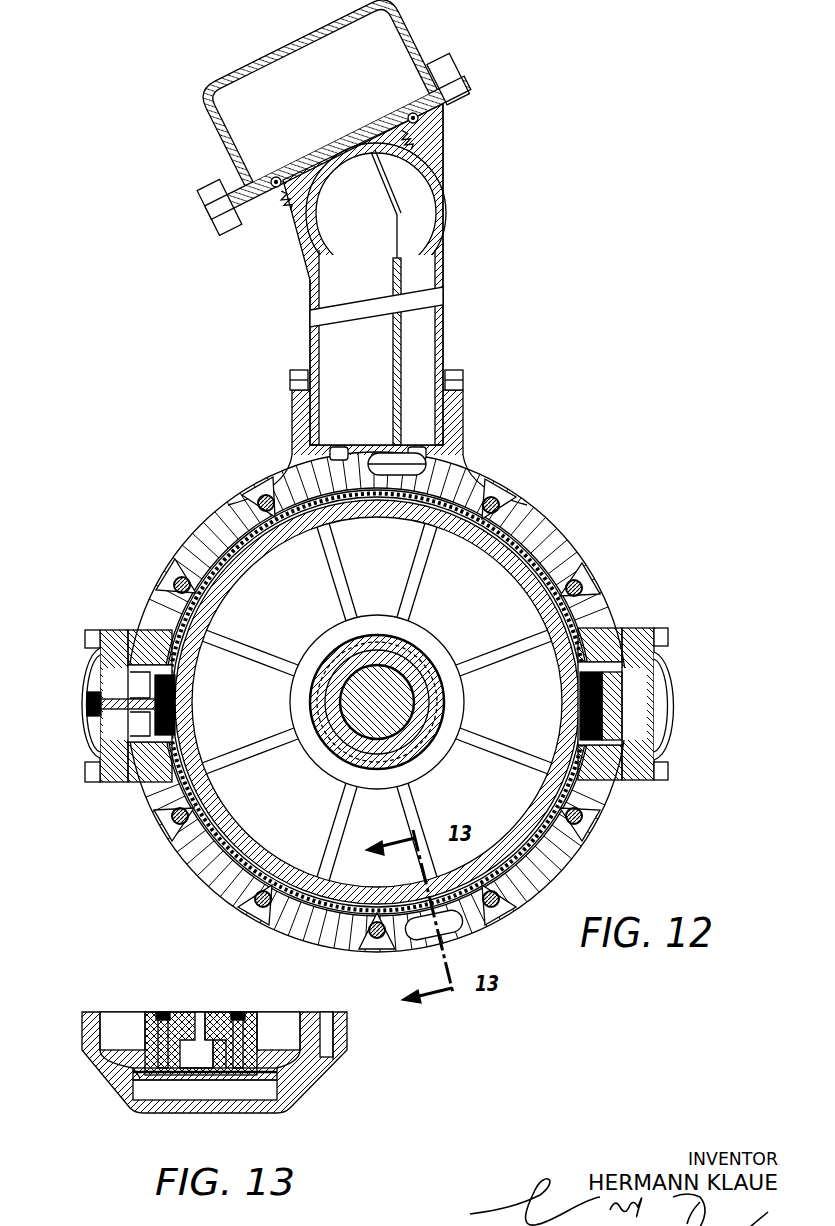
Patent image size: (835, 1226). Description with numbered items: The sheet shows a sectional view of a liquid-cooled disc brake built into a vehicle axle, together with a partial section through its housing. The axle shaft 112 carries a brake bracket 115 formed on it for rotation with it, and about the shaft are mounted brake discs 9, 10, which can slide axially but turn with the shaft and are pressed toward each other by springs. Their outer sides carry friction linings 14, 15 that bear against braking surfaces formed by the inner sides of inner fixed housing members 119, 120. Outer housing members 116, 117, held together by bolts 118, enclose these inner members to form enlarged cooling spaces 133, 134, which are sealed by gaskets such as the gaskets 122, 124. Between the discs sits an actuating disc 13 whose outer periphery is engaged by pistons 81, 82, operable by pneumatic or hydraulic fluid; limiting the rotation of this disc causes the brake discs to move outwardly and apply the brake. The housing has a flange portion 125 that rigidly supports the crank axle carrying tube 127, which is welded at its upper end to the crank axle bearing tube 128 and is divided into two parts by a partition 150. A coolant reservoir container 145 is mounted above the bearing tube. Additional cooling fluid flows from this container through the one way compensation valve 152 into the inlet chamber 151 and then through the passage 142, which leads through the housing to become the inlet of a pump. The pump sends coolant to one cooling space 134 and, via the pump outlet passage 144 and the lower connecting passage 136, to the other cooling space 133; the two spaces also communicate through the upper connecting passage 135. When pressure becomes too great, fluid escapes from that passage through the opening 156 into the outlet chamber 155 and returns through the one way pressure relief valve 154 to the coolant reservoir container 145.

In FIG. 12, the brake disc 9 is at (452, 670).
In FIG. 13, the brake disc 9 is at (177, 1025).
In FIG. 13, the brake disc 10 is at (218, 1020).
In FIG. 12, the actuating disc 13 is at (520, 843).
In FIG. 13, the actuating disc 13 is at (200, 1020).
In FIG. 12, the friction lining 14 is at (478, 600).
In FIG. 13, the friction lining 14 is at (152, 1025).
In FIG. 13, the friction lining 15 is at (228, 1020).
In FIG. 12, the piston 81 is at (605, 690).
In FIG. 12, the piston 82 is at (97, 770).
In FIG. 12, the axle shaft 112 is at (332, 703).
In FIG. 12, the brake bracket 115 is at (345, 656).
In FIG. 12, the outer housing member 116 is at (212, 855).
In FIG. 13, the outer housing member 116 is at (90, 1027).
In FIG. 13, the outer housing member 117 is at (339, 1022).
In FIG. 12, the bolt 118 is at (172, 818).
In FIG. 13, the inner fixed housing member 119 is at (108, 1027).
In FIG. 13, the inner fixed housing member 120 is at (250, 1020).
In FIG. 13, the gasket 122 is at (140, 1072).
In FIG. 13, the gasket 124 is at (265, 1069).
In FIG. 12, the flange portion 125 is at (465, 416).
In FIG. 12, the crank axle carrying tube 127 is at (311, 379).
In FIG. 12, the crank axle bearing tube 128 is at (416, 202).
In FIG. 13, the cooling space 133 is at (141, 1030).
In FIG. 13, the cooling space 134 is at (292, 1022).
In FIG. 12, the upper connecting passage 135 is at (378, 464).
In FIG. 12, the lower connecting passage 136 is at (450, 922).
In FIG. 13, the lower connecting passage 136 is at (202, 1095).
In FIG. 12, the passage 142 is at (338, 452).
In FIG. 13, the pump outlet passage 144 is at (315, 1022).
In FIG. 12, the coolant reservoir container 145 is at (352, 70).
In FIG. 12, the partition 150 is at (400, 377).
In FIG. 12, the inlet chamber 151 is at (356, 378).
In FIG. 12, the one way compensation valve 152 is at (274, 188).
In FIG. 12, the one way pressure relief valve 154 is at (419, 118).
In FIG. 12, the outlet chamber 155 is at (417, 340).
In FIG. 12, the opening 156 is at (417, 452).